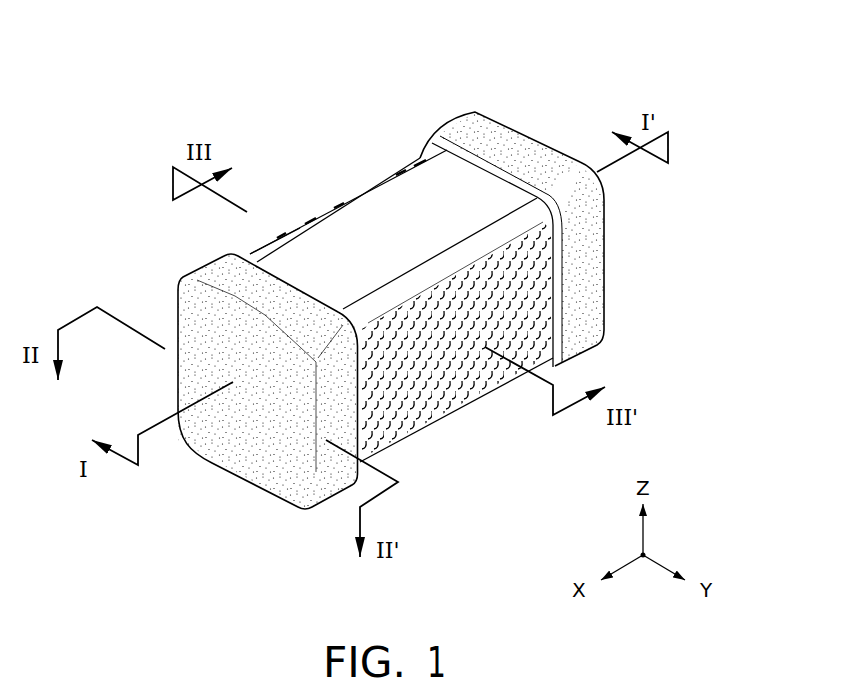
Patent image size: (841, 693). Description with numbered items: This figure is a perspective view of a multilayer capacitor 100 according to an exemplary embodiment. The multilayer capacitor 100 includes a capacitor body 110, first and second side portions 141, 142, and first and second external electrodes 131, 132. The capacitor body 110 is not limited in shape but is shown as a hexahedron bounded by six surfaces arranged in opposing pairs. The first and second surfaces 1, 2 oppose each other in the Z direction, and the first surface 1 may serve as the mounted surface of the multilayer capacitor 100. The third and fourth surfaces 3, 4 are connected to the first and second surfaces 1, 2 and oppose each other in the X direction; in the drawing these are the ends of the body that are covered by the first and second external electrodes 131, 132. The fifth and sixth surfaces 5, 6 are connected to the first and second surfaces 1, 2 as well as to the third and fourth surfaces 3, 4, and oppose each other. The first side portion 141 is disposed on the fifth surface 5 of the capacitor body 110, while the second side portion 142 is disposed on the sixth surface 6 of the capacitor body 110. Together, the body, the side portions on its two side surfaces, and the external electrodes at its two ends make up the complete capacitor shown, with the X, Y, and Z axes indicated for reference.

The multilayer capacitor 100 is at (310, 22).
The capacitor body 110 is at (380, 216).
The first external electrode 131 is at (267, 470).
The second external electrode 132 is at (582, 303).
The first side portion 141 is at (403, 207).
The second side portion 142 is at (504, 228).
The first surface 1 is at (398, 396).
The second surface 2 is at (364, 192).
The third surface 3 is at (250, 418).
The fourth surface 4 is at (521, 161).
The fifth surface 5 is at (337, 241).
The sixth surface 6 is at (452, 384).